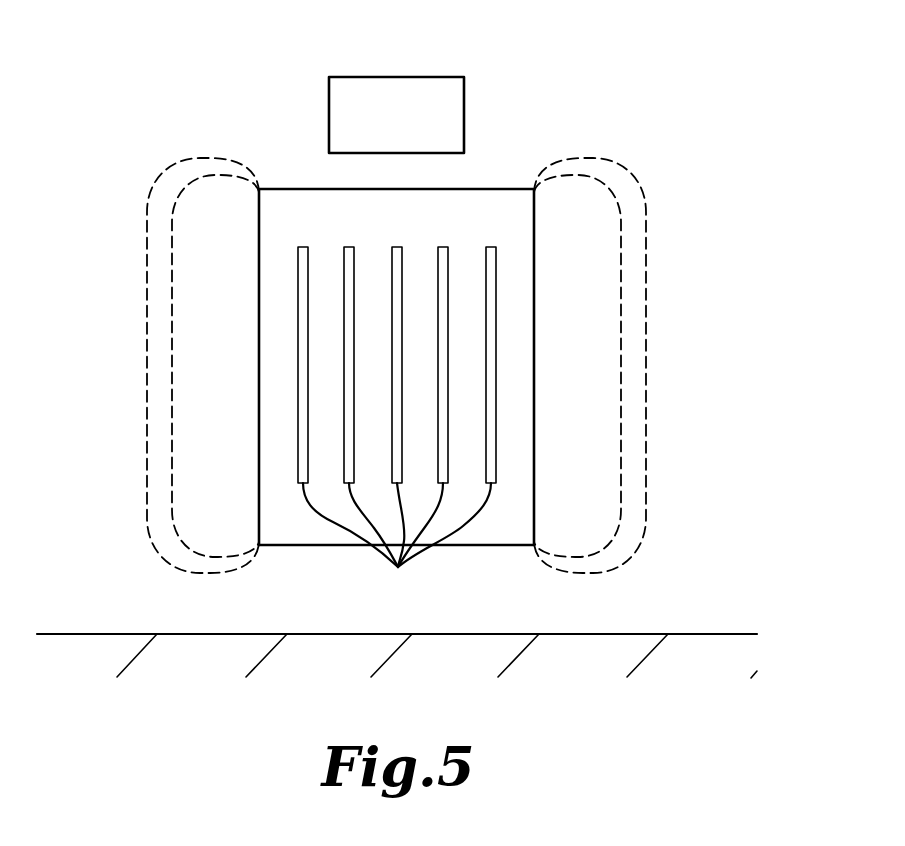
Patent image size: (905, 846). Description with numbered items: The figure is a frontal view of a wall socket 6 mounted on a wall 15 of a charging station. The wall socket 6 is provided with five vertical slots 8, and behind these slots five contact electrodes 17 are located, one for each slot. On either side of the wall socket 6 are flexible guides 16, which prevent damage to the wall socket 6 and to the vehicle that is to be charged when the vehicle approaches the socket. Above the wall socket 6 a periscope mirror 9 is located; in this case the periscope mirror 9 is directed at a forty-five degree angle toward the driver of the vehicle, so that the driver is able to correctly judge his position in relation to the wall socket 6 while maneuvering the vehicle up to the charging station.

The wall socket 6 is at (485, 205).
The vertical slots 8 is at (397, 546).
The periscope mirror 9 is at (398, 93).
The wall 15 is at (672, 113).
The flexible guides 16 is at (147, 230).
The contact electrodes 17 is at (497, 282).